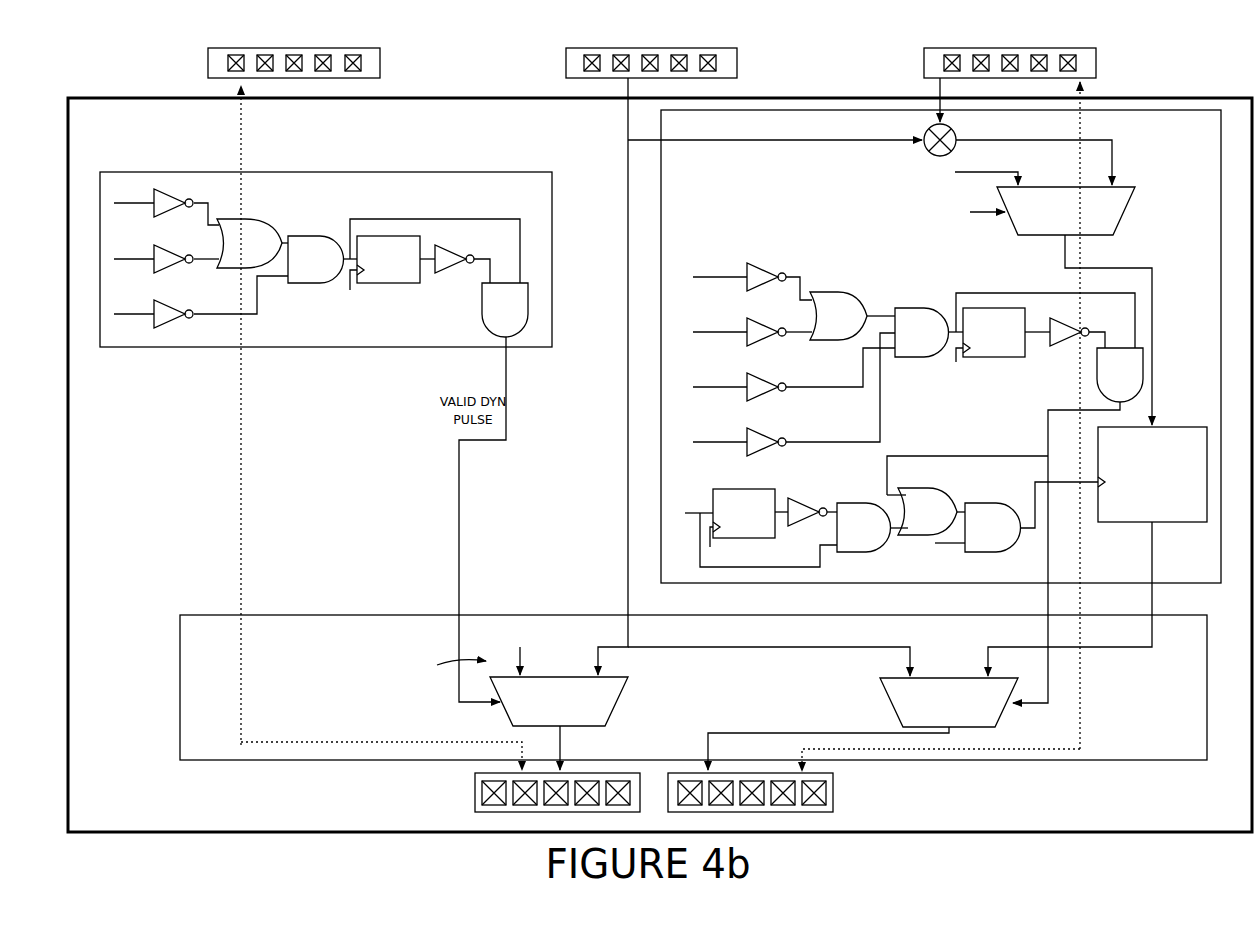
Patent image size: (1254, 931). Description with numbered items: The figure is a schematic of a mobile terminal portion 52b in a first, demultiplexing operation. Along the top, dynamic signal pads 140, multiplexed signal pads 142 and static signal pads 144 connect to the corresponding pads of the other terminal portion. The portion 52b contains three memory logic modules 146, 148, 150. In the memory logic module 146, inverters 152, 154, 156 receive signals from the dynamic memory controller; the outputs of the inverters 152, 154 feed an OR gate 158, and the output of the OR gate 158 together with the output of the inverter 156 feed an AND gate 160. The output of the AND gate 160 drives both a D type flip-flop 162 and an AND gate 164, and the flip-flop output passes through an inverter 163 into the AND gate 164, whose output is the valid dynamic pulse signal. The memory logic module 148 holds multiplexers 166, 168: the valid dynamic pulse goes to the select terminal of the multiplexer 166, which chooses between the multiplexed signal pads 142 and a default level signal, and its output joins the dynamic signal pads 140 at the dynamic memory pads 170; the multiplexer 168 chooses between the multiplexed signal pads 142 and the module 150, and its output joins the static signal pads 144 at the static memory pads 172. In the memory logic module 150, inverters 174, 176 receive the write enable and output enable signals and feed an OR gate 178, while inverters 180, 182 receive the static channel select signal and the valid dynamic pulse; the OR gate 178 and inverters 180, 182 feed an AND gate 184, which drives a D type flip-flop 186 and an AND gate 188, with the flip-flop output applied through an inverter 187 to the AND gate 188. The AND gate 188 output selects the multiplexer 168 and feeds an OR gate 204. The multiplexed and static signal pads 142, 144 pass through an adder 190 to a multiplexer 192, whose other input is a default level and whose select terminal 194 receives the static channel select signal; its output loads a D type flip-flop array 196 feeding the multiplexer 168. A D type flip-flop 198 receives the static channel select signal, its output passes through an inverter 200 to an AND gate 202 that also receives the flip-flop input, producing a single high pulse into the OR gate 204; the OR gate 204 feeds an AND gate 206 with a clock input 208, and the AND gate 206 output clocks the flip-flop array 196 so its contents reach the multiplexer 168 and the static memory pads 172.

The mobile terminal portion 52b is at (1163, 84).
The dynamic signal pads 140 is at (362, 48).
The multiplexed signal pads 142 is at (720, 48).
The static signal pads 144 is at (1078, 48).
The memory logic module 146 is at (367, 350).
The memory logic module 148 is at (368, 611).
The memory logic module 150 is at (658, 412).
The inverter 152 is at (160, 197).
The inverter 154 is at (160, 253).
The inverter 156 is at (160, 308).
The OR gate 158 is at (262, 230).
The AND gate 160 is at (322, 259).
The D type flip-flop 162 is at (435, 254).
The inverter 163 is at (451, 268).
The AND gate 164 is at (505, 310).
The multiplexer 166 is at (545, 676).
The multiplexer 168 is at (950, 677).
The dynamic memory pads 170 is at (475, 793).
The static memory pads 172 is at (838, 797).
The inverter 174 is at (755, 268).
The inverter 176 is at (755, 323).
The OR gate 178 is at (852, 316).
The inverter 180 is at (755, 378).
The inverter 182 is at (755, 433).
The AND gate 184 is at (929, 332).
The D type flip-flop 186 is at (1045, 327).
The inverter 187 is at (1063, 342).
The AND gate 188 is at (1078, 525).
The adder 190 is at (953, 130).
The multiplexer 192 is at (1126, 214).
The select terminal 194 is at (987, 202).
The D type flip-flop array 196 is at (1097, 551).
The D type flip-flop 198 is at (761, 528).
The inverter 200 is at (797, 503).
The AND gate 202 is at (872, 527).
The OR gate 204 is at (967, 495).
The AND gate 206 is at (1031, 517).
The input 208 is at (955, 546).